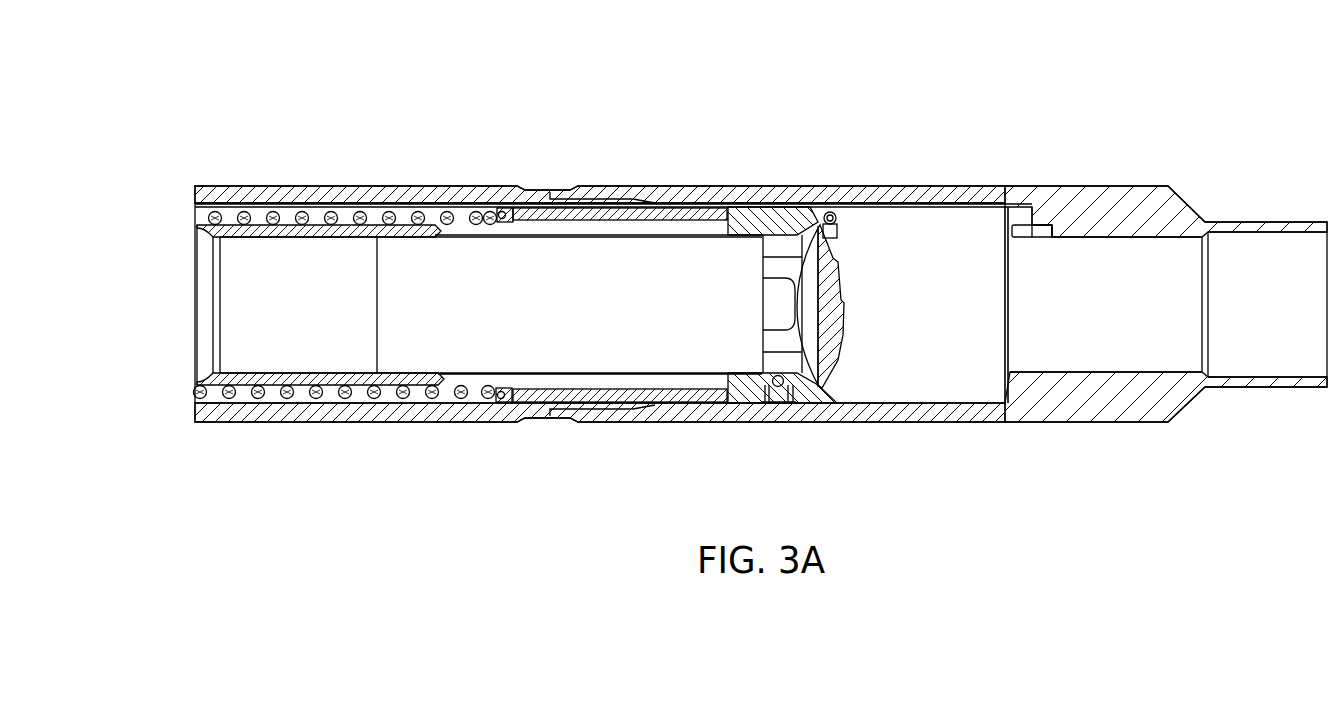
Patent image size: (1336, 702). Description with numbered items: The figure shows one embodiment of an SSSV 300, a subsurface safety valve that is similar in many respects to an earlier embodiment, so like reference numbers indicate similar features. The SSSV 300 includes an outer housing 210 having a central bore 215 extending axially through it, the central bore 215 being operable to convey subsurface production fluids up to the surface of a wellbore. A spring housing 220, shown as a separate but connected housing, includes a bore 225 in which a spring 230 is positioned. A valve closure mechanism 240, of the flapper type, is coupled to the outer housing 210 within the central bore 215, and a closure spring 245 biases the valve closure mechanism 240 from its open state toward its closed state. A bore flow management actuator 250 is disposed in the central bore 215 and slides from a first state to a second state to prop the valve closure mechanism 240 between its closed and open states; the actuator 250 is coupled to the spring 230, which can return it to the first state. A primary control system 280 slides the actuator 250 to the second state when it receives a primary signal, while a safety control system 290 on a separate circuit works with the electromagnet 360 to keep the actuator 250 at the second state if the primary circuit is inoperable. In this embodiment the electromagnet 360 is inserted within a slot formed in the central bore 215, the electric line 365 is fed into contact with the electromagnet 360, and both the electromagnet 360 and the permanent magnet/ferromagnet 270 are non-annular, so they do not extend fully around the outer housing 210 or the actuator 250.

The SSSV 300 is at (175, 75).
The outer housing 210 is at (1128, 186).
The central bore 215 is at (1280, 318).
The spring housing 220 is at (517, 186).
The bore 225 is at (415, 400).
The spring 230 is at (488, 403).
The valve closure mechanism 240 is at (820, 388).
The closure spring 245 is at (832, 214).
The bore flow management actuator 250 is at (618, 238).
The permanent magnet/ferromagnet 270 is at (743, 232).
The primary control system 280 is at (185, 397).
The safety control system 290 is at (185, 207).
The electromagnet 360 is at (1030, 228).
The electric line 365 is at (943, 203).